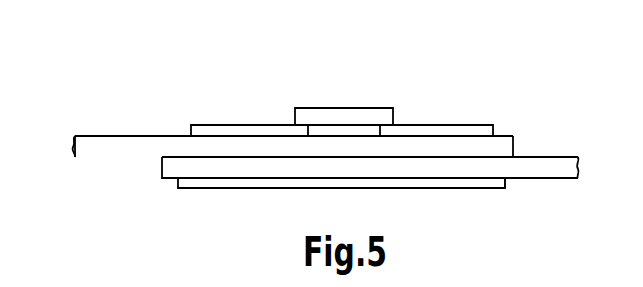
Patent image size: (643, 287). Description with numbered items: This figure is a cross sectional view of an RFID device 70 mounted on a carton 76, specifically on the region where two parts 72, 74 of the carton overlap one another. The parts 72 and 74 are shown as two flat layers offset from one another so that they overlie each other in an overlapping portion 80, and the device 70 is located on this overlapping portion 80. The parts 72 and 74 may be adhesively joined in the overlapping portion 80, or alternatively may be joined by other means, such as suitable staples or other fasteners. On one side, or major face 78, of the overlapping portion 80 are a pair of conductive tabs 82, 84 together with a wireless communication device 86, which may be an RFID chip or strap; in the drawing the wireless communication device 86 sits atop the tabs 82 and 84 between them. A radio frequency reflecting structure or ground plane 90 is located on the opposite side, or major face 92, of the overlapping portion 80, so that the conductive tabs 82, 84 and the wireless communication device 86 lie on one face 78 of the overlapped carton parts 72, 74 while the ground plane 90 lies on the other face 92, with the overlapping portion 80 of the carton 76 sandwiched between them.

The RFID device 70 is at (321, 135).
The part of carton 72 is at (87, 146).
The part of carton 74 is at (547, 181).
The carton 76 is at (302, 140).
The major face 78 is at (513, 136).
The overlapping portion 80 is at (359, 207).
The conductive tab 82 is at (208, 128).
The conductive tab 84 is at (443, 127).
The wireless communication device 86 is at (350, 113).
The radio frequency reflecting structure 90 is at (357, 180).
The major face 92 is at (513, 182).